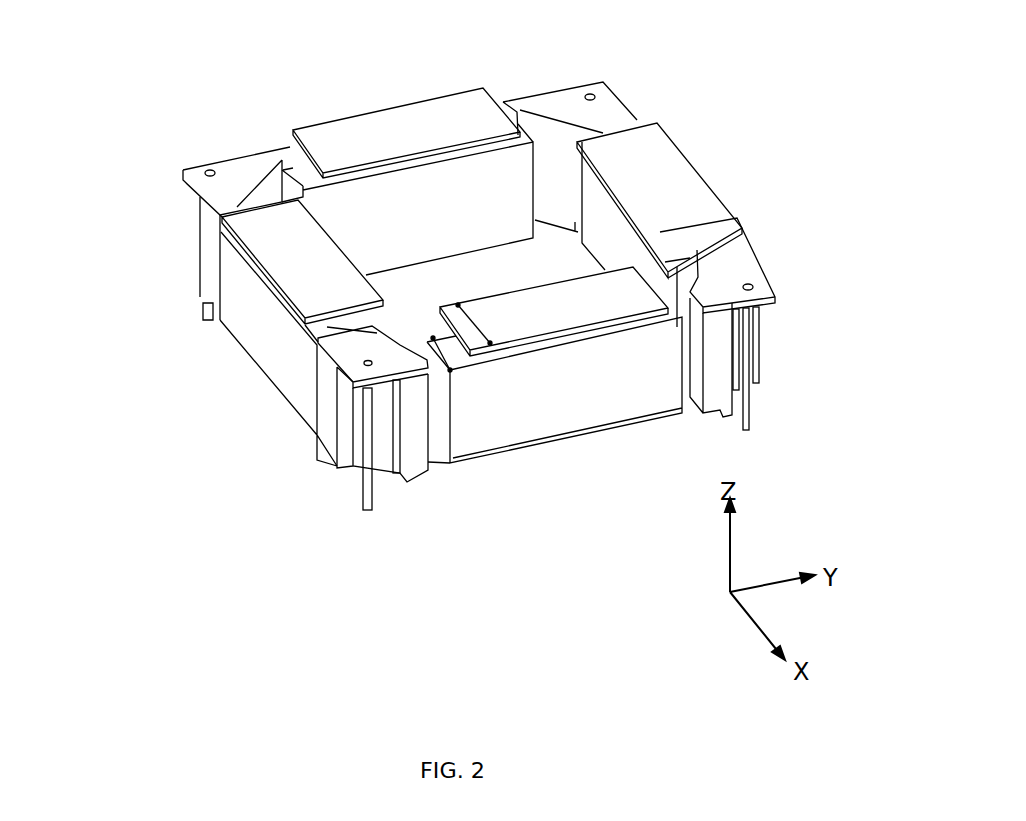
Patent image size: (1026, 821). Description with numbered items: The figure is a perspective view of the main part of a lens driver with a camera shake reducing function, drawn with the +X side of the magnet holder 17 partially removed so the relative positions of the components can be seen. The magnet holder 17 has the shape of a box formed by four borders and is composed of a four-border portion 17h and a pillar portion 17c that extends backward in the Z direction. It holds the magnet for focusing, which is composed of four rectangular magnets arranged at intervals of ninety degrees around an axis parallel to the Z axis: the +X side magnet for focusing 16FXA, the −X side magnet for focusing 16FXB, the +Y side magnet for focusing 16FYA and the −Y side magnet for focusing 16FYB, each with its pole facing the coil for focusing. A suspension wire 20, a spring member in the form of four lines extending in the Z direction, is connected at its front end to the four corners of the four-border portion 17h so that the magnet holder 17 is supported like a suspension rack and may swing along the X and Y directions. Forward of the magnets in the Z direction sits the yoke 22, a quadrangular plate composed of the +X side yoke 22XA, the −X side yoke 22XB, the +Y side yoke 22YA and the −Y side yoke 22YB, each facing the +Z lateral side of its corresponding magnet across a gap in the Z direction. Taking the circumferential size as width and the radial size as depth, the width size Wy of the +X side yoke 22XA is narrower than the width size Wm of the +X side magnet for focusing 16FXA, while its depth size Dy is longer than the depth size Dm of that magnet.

The magnet holder 17 is at (249, 168).
The four-border portion 17h is at (723, 235).
The pillar portion 17c is at (327, 420).
The suspension wire 20 is at (372, 478).
The yoke 22 is at (458, 257).
The -X side yoke 22XB is at (393, 125).
The +Y side yoke 22YA is at (682, 193).
The +X side yoke 22XA is at (593, 300).
The -Y side yoke 22YB is at (293, 255).
The -X side magnet for focusing 16FXB is at (470, 193).
The +Y side magnet for focusing 16FYA is at (612, 227).
The +X side magnet for focusing 16FXA is at (477, 423).
The -Y side magnet for focusing 16FYB is at (267, 337).
The depth size of the +X side yoke Dy is at (460, 304).
The depth size of the +X side magnet for focusing Dm is at (420, 335).
The width size of the +X side yoke Wy is at (554, 305).
The width size of the +X side magnet for focusing Wm is at (567, 410).